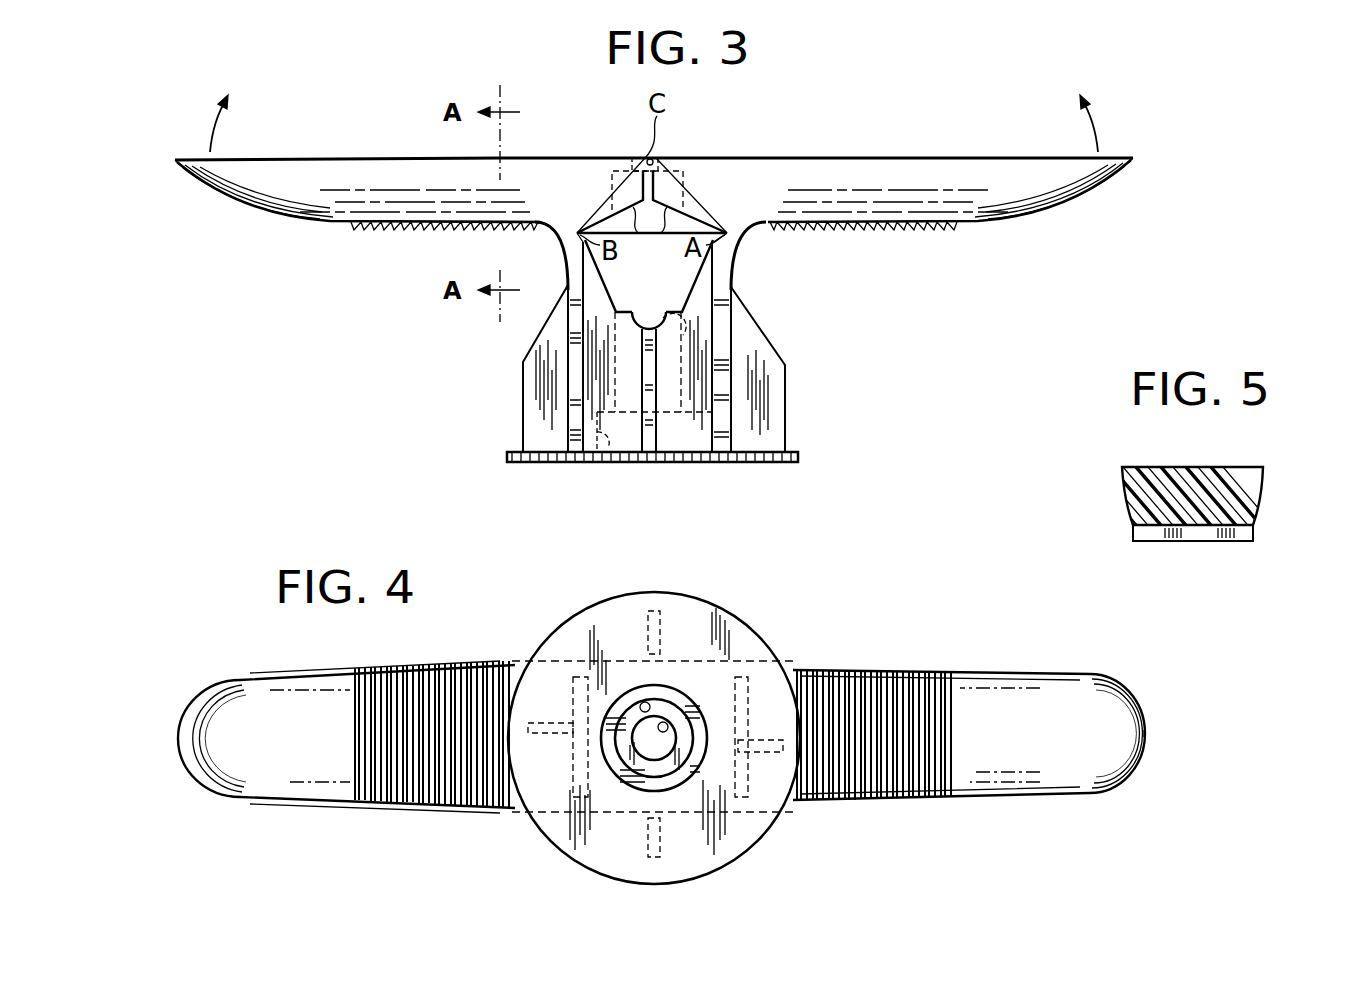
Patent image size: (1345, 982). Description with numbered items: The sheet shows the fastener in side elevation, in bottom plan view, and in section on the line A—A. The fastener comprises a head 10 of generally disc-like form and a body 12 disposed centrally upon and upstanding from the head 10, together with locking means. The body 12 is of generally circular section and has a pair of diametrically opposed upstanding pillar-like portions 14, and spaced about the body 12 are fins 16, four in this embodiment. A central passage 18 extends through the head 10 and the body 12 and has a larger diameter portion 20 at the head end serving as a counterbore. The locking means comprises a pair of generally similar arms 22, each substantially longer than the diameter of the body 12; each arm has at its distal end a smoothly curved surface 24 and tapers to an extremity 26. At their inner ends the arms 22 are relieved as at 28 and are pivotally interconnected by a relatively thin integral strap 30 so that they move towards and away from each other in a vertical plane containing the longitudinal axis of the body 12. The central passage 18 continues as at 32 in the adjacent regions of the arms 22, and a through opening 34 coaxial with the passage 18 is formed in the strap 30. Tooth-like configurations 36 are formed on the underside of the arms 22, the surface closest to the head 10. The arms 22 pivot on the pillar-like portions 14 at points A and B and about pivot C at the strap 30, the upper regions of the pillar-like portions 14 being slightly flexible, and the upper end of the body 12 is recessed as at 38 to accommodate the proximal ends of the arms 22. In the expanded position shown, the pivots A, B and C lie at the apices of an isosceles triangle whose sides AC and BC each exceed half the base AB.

In FIG. 3, the head 10 is at (510, 455).
In FIG. 4, the head 10 is at (740, 851).
In FIG. 3, the body 12 is at (737, 332).
In FIG. 3, the pillar-like portions 14 is at (578, 285).
In FIG. 4, the pillar-like portions 14 is at (725, 715).
In FIG. 3, the fins 16 is at (533, 398).
In FIG. 4, the fins 16 is at (660, 632).
In FIG. 3, the central passage 18 is at (666, 318).
In FIG. 4, the central passage 18 is at (645, 702).
In FIG. 3, the larger diameter portion 20 is at (610, 454).
In FIG. 4, the larger diameter portion 20 is at (682, 782).
In FIG. 3, the arms 22 is at (333, 158).
In FIG. 4, the arms 22 is at (297, 780).
In FIG. 5, the arms 22 is at (1225, 496).
In FIG. 3, the smoothly curved surface 24 is at (222, 197).
In FIG. 4, the smoothly curved surface 24 is at (290, 752).
In FIG. 3, the extremity 26 is at (178, 160).
In FIG. 4, the extremity 26 is at (177, 730).
In FIG. 3, the relief 28 is at (652, 213).
In FIG. 3, the strap 30 is at (640, 165).
In FIG. 3, the passage continuation 32 is at (685, 183).
In FIG. 3, the through opening 34 is at (652, 163).
In FIG. 4, the through opening 34 is at (665, 722).
In FIG. 3, the tooth-like configurations 36 is at (392, 231).
In FIG. 4, the tooth-like configurations 36 is at (852, 708).
In FIG. 5, the tooth-like configurations 36 is at (1226, 545).
In FIG. 3, the recess 38 is at (688, 268).